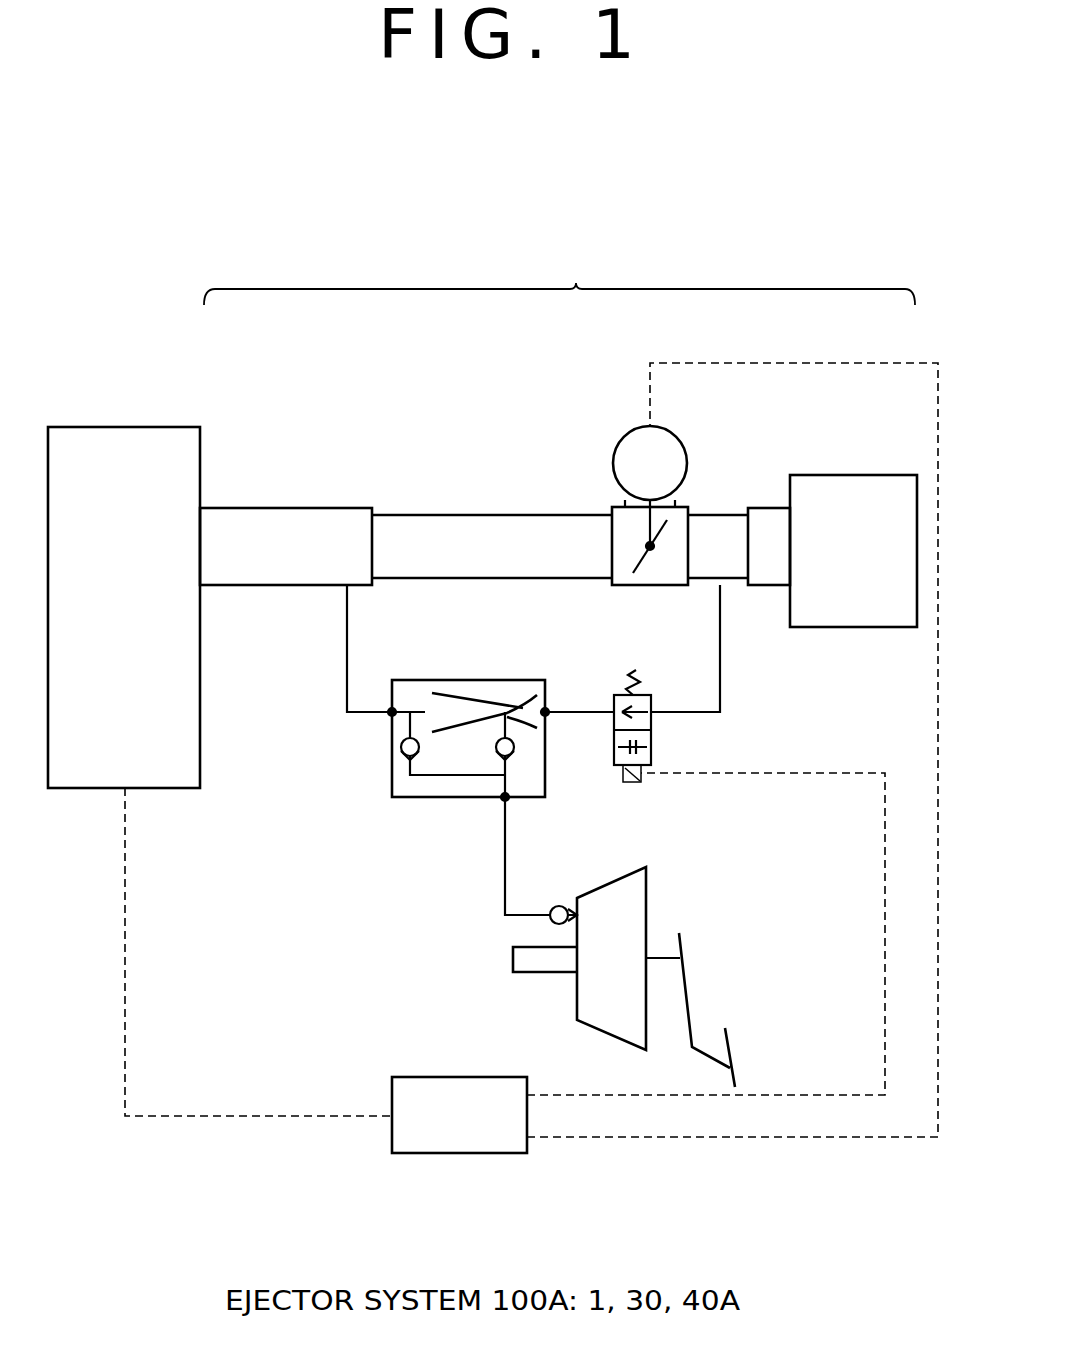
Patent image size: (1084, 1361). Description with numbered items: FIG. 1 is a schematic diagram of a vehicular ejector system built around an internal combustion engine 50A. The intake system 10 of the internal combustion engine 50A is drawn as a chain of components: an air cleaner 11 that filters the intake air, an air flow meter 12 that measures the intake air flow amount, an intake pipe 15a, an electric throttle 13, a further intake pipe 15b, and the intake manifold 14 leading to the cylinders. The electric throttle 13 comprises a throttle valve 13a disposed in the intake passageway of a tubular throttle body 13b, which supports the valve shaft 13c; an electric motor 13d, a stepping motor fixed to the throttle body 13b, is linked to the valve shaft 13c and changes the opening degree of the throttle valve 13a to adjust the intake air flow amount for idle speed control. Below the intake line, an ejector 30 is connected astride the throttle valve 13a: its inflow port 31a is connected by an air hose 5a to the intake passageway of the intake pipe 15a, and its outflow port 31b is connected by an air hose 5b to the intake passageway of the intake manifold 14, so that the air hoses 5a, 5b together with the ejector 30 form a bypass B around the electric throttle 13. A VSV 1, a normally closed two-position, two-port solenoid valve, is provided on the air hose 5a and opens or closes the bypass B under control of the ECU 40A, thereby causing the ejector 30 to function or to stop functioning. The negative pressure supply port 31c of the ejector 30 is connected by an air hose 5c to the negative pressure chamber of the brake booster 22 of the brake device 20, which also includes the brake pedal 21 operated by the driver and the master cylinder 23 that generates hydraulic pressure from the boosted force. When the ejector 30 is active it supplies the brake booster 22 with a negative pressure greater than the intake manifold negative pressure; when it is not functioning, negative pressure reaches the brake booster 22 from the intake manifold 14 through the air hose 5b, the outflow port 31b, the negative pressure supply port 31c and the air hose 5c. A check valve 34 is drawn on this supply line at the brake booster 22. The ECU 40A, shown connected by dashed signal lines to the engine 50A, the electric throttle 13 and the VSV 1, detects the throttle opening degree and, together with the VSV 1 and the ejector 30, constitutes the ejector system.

The intake system 10 is at (559, 277).
The air cleaner 11 is at (840, 475).
The air flow meter 12 is at (768, 508).
The electric throttle 13 is at (553, 449).
The throttle valve 13a is at (633, 573).
The throttle body 13b is at (612, 507).
The valve shaft 13c is at (648, 500).
The electric motor 13d is at (633, 428).
The intake manifold 14 is at (283, 508).
The intake pipe 15a is at (717, 515).
The intake pipe 15b is at (422, 515).
The VSV (vacuum switching valve) 1 is at (651, 730).
The air hose 5a is at (720, 642).
The air hose 5b is at (347, 655).
The air hose 5c is at (505, 892).
The brake device 20 is at (557, 977).
The brake pedal 21 is at (735, 1040).
The brake booster 22 is at (647, 920).
The master cylinder 23 is at (513, 958).
The ejector 30 is at (462, 737).
The inflow port 31a is at (545, 712).
The outflow port 31b is at (392, 712).
The negative pressure supply port 31c is at (505, 797).
The check valve 34 is at (562, 905).
The ECU 40A is at (460, 1155).
The internal combustion engine 50A is at (130, 427).
The bypass B is at (751, 710).